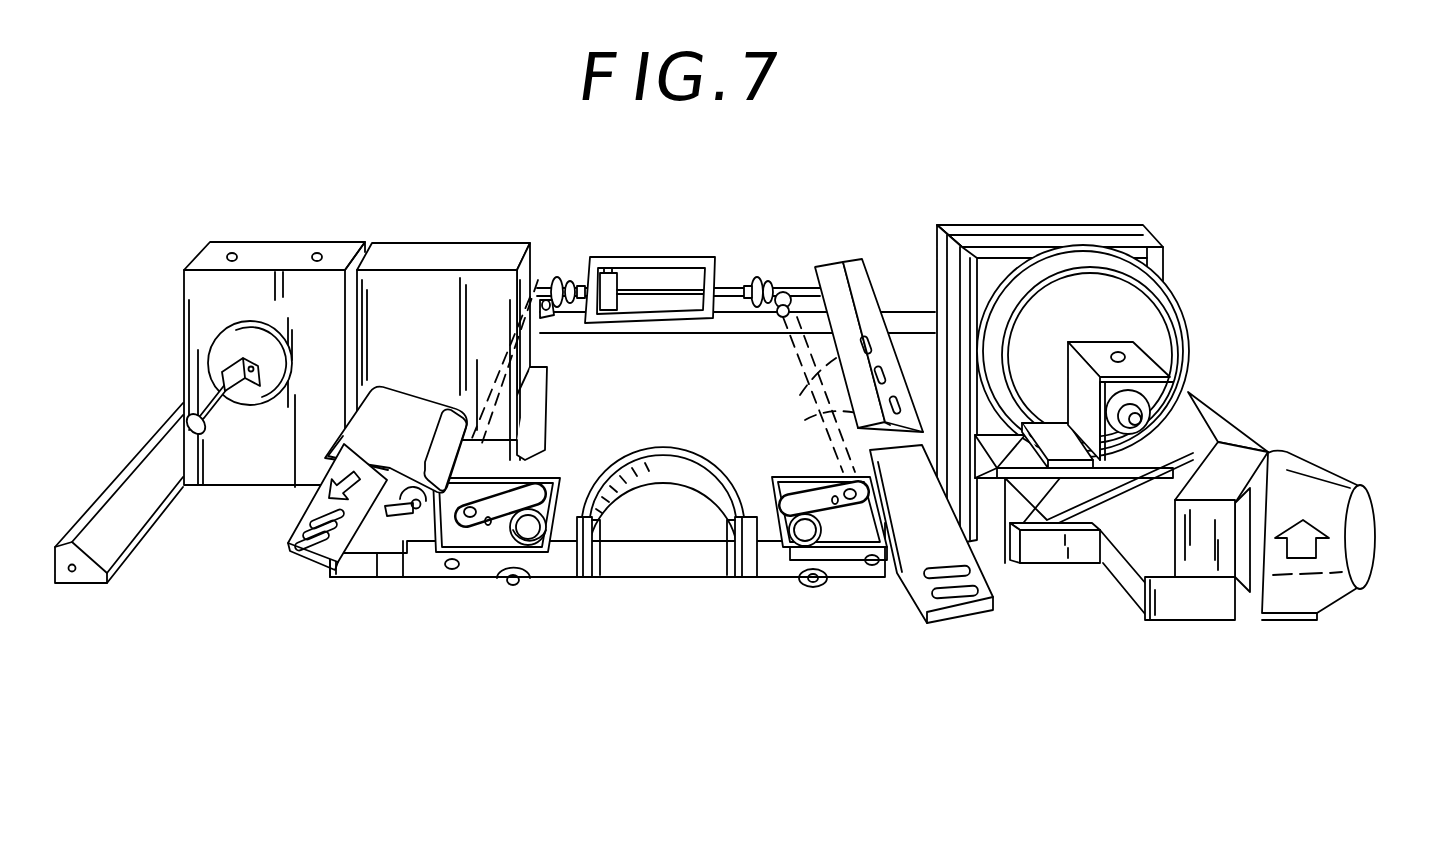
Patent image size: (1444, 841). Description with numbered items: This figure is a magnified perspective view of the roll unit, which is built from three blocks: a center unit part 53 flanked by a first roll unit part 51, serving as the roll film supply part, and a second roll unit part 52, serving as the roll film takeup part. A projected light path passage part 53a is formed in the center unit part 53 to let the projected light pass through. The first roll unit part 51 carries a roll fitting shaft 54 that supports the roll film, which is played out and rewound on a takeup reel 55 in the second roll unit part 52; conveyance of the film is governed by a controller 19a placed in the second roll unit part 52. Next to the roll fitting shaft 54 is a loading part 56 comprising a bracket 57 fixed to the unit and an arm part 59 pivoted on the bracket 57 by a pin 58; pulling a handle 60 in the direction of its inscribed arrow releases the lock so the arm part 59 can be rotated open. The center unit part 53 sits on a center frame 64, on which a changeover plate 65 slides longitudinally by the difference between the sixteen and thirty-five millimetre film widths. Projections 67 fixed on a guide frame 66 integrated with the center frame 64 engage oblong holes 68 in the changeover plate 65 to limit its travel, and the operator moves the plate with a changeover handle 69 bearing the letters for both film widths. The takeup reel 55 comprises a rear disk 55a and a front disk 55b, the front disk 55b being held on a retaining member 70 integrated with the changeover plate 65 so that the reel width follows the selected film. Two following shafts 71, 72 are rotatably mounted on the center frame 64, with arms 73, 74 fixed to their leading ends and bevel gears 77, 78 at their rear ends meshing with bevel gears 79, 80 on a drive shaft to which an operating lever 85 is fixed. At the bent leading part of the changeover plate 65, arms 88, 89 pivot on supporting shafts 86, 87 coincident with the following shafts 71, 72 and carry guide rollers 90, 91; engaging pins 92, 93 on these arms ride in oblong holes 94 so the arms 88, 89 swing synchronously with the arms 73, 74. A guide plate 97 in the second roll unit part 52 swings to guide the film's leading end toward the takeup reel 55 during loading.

The controller 19a is at (1357, 537).
The first roll unit part 51 is at (318, 622).
The second roll unit part 52 is at (1072, 600).
The center unit part 53 is at (665, 590).
The projected light path passage part 53a is at (670, 463).
The roll fitting shaft 54 is at (185, 384).
The takeup reel 55 is at (1090, 308).
The rear disk 55a is at (1043, 250).
The front disk 55b is at (1172, 313).
The loading part 56 is at (325, 414).
The bracket 57 is at (388, 512).
The pin 58 is at (416, 509).
The arm part 59 is at (418, 412).
The handle 60 is at (288, 536).
The center frame 64 is at (587, 578).
The changeover plate 65 is at (765, 578).
The guide frame 66 is at (827, 270).
The projections 67 is at (888, 400).
The oblong holes 68 is at (830, 430).
The changeover handle 69 is at (955, 595).
The retaining member 70 is at (1133, 457).
The following shaft 71 is at (527, 408).
The following shaft 72 is at (838, 378).
The arm 73 is at (531, 485).
The arm 74 is at (823, 497).
The bevel gear 77 is at (545, 285).
The bevel gear 78 is at (783, 290).
The bevel gear 79 is at (558, 277).
The bevel gear 80 is at (760, 278).
The operating lever 85 is at (617, 280).
The supporting shaft 86 is at (452, 570).
The supporting shaft 87 is at (872, 566).
The arm 88 is at (500, 585).
The arm 89 is at (818, 560).
The guide roller 90 is at (547, 562).
The guide roller 91 is at (805, 538).
The engaging pin 92 is at (487, 513).
The engaging pin 93 is at (837, 593).
The oblong holes 94 is at (598, 530).
The guide plate 97 is at (1195, 393).